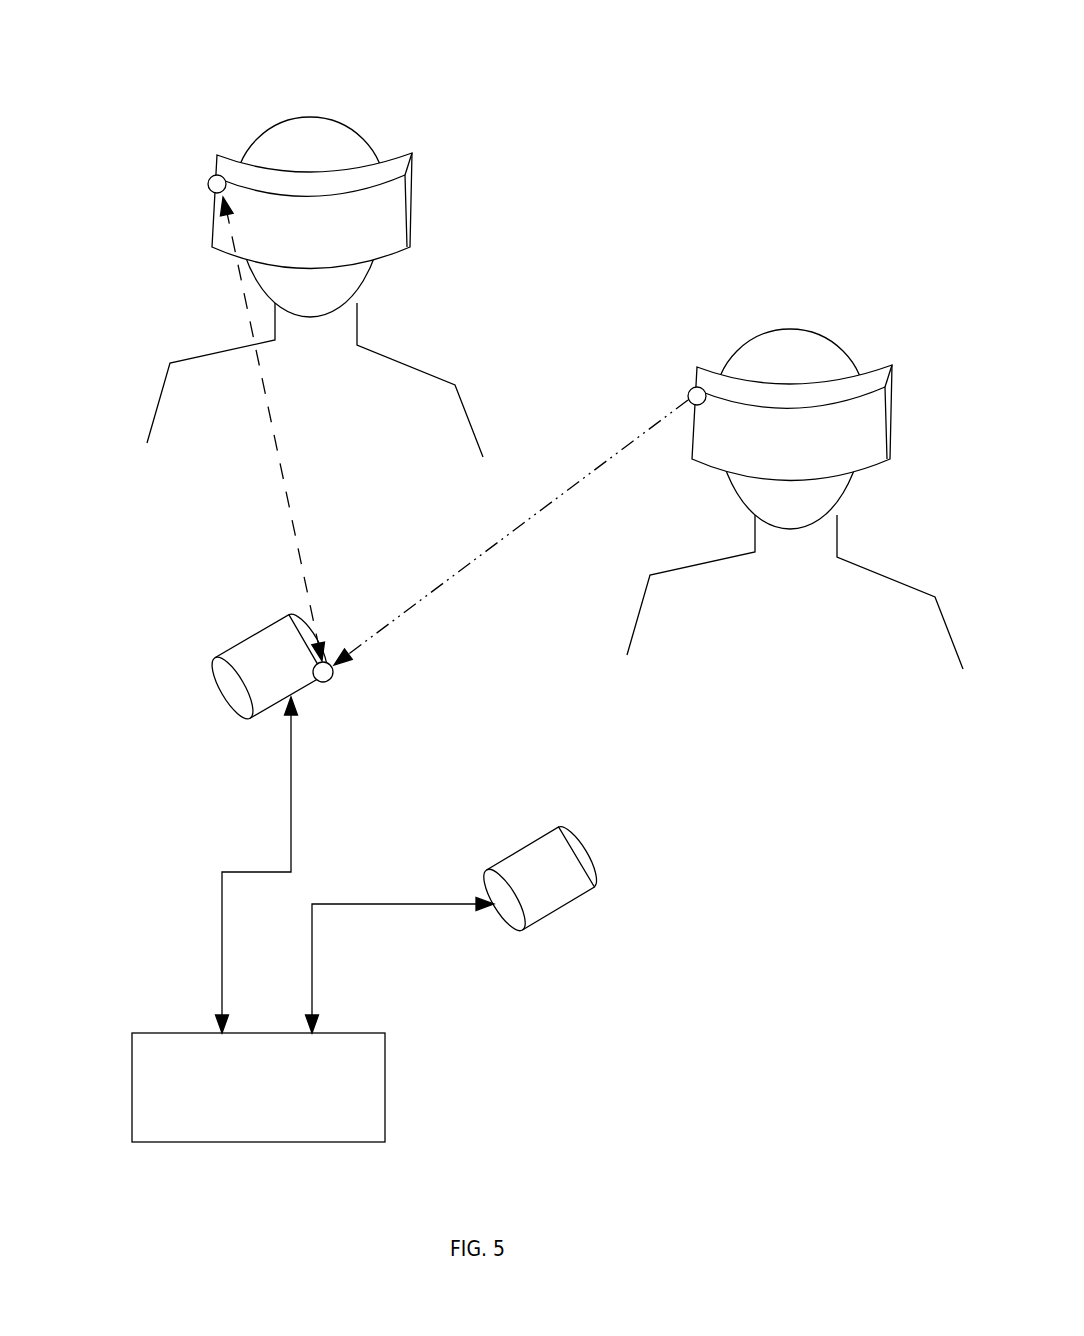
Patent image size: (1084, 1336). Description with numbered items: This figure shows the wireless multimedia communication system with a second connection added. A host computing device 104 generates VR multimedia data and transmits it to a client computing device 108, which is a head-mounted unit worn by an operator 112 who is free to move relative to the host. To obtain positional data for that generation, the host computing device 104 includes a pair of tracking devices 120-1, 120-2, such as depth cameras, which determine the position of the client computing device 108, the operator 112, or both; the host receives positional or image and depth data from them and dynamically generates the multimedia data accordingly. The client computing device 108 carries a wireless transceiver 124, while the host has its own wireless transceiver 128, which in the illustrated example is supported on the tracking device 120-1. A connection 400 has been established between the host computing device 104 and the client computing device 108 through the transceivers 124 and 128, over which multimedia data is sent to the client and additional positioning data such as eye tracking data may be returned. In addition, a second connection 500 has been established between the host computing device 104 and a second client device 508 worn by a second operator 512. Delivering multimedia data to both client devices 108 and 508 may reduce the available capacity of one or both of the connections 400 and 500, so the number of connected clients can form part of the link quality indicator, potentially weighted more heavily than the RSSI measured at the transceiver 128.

The host computing device 104 is at (158, 918).
The client computing device 108 is at (198, 229).
The operator 112 is at (282, 128).
The tracking device 120-1 is at (247, 637).
The tracking device 120-2 is at (507, 857).
The wireless transceiver 124 is at (207, 183).
The wireless transceiver 128 is at (332, 678).
The connection 400 is at (277, 429).
The second connection 500 is at (511, 532).
The second client device 508 is at (791, 372).
The second operator 512 is at (768, 328).